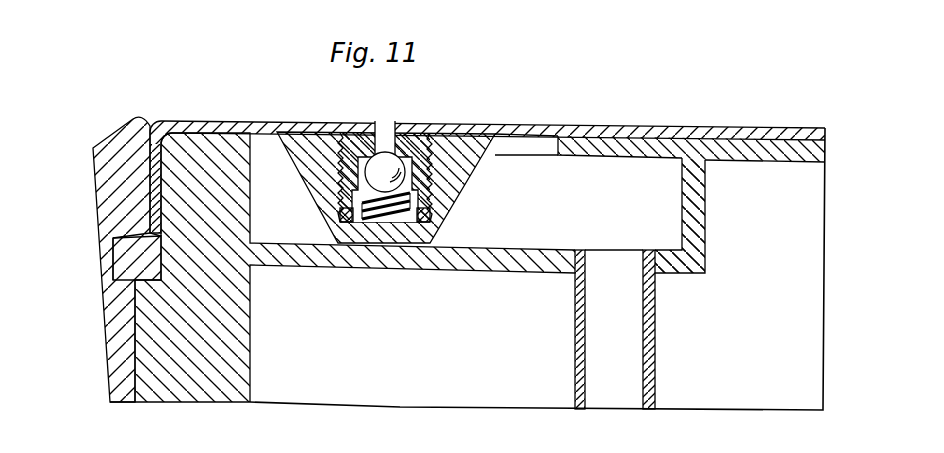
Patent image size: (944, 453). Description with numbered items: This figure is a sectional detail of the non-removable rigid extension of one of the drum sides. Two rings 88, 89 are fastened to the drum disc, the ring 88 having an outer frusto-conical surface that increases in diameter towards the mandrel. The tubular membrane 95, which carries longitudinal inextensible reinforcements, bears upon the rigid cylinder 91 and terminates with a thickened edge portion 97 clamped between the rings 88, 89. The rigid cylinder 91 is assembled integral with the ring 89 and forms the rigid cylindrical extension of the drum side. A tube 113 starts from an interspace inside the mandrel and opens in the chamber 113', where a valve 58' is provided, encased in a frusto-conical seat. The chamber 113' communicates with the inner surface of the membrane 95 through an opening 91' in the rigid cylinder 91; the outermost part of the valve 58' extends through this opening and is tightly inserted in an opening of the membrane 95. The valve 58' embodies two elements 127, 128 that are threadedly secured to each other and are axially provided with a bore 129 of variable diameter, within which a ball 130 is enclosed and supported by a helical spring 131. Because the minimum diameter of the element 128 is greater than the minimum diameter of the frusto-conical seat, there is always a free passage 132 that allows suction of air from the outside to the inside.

The ring 88 is at (119, 136).
The ring 89 is at (209, 145).
The thickened edge portion 97 is at (122, 264).
The valve 58' is at (487, 158).
The element 127 is at (350, 122).
The element 128 is at (458, 180).
The bore 129 is at (397, 128).
The ball 130 is at (381, 160).
The helical spring 131 is at (385, 226).
The free passage 132 is at (355, 243).
The rigid cylinder 91 is at (691, 178).
The opening 91' is at (527, 120).
The tubular membrane 95 is at (612, 140).
The tube 113 is at (585, 329).
The chamber 113' is at (677, 177).